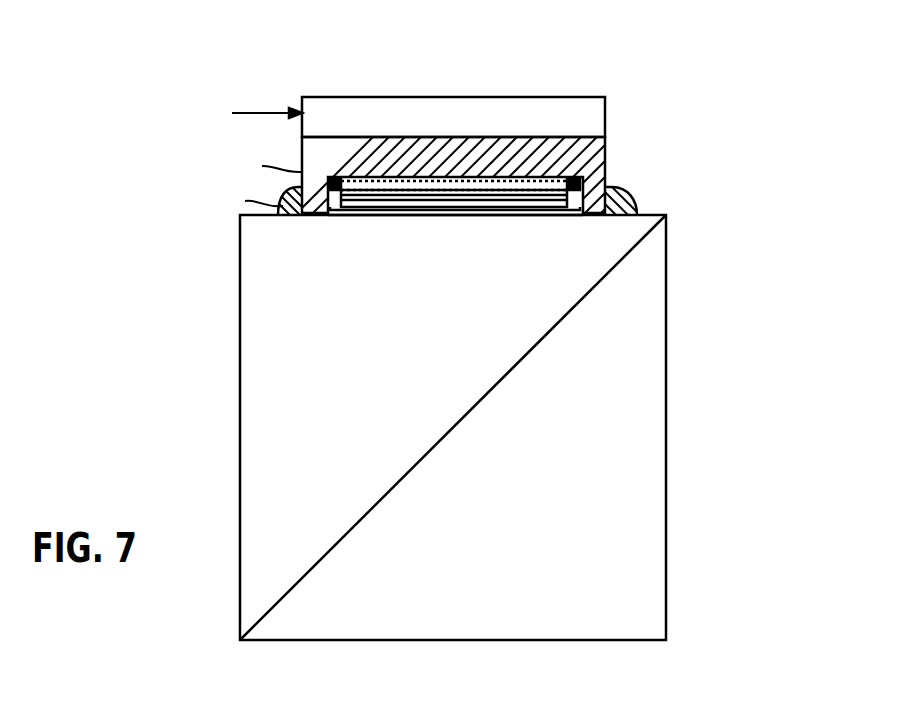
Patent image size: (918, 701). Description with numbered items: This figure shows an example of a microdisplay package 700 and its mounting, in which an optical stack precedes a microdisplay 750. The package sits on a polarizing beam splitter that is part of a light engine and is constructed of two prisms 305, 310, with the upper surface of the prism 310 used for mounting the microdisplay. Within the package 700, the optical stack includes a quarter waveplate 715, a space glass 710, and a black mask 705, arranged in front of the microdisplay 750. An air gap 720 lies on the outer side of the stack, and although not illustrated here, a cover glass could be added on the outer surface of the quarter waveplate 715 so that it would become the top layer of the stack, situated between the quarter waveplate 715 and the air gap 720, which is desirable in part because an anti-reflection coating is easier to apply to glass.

The microdisplay package 700 is at (316, 84).
The microdisplay 750 is at (512, 177).
The black mask 705 is at (452, 195).
The space glass 710 is at (412, 200).
The quarter waveplate 715 is at (382, 210).
The air gap 720 is at (355, 215).
The prism 305 is at (607, 616).
The prism 310 is at (297, 541).